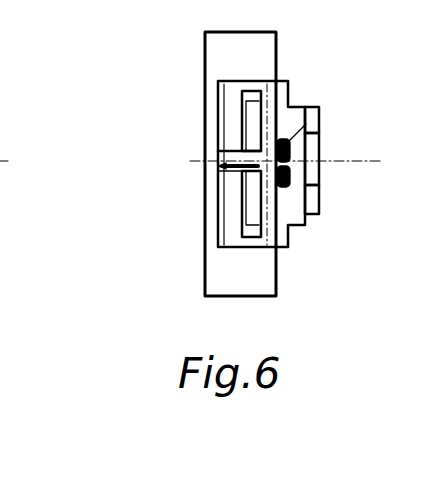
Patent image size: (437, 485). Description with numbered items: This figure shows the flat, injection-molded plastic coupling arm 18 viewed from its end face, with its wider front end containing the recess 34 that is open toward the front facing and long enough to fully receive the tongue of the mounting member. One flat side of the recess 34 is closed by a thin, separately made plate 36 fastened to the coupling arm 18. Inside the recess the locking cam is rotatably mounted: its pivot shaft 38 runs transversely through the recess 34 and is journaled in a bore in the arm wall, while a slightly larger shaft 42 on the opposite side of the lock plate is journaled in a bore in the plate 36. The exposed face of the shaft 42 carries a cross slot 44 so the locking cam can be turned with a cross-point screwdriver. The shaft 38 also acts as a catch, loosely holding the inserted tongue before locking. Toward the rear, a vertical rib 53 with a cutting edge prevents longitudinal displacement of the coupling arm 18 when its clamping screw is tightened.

The coupling arm 18 is at (345, 142).
The recess 34 is at (228, 120).
The plate 36 is at (283, 248).
The shaft 38 is at (240, 168).
The shaft 42 is at (321, 125).
The cross slot 44 is at (292, 163).
The vertical rib 53 is at (319, 108).